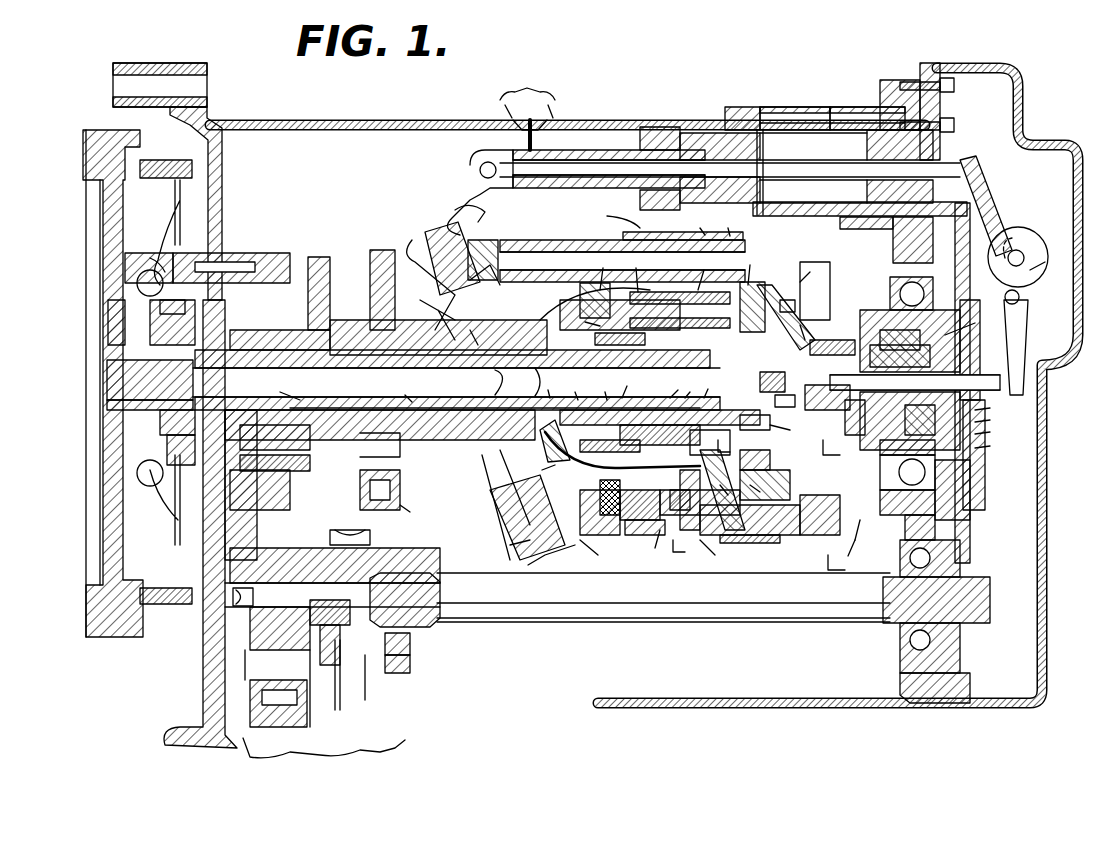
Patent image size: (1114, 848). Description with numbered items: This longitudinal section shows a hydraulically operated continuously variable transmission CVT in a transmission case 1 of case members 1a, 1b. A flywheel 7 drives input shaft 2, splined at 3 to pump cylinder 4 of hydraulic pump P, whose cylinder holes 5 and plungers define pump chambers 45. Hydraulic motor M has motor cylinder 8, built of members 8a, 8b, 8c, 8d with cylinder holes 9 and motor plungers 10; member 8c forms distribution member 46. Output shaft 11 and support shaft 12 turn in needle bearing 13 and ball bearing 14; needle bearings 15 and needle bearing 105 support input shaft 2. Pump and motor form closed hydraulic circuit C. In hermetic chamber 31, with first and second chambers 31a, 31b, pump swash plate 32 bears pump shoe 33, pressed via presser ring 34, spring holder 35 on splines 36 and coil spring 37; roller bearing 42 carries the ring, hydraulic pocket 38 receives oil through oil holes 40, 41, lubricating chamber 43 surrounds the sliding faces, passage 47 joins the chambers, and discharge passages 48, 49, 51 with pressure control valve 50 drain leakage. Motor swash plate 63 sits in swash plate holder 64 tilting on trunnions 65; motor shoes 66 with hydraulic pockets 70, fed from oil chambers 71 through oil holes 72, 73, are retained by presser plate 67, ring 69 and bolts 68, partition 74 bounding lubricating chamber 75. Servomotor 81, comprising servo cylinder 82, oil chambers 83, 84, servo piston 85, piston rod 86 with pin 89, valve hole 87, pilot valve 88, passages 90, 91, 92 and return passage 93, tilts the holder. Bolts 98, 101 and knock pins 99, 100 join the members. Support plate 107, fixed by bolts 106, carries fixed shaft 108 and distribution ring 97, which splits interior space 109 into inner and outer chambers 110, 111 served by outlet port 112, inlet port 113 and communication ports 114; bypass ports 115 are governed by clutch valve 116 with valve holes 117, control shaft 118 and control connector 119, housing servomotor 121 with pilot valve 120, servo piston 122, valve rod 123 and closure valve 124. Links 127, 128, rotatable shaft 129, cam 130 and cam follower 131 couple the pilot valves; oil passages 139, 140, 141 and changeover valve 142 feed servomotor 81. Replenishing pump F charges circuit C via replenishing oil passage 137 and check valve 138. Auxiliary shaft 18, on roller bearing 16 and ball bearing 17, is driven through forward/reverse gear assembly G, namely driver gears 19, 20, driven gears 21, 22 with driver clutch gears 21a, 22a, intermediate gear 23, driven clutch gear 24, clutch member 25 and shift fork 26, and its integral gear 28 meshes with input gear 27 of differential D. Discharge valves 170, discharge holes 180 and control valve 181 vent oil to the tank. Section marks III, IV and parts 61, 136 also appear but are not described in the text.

The power unit 1 is at (527, 90).
The engine housing section 1a is at (500, 104).
The transmission housing section 1b is at (542, 104).
The input shaft 2 is at (335, 405).
The planetary gear 3 is at (709, 386).
The planetary gear element 4 is at (691, 388).
The gear element 5 is at (722, 490).
The flywheel 7 is at (110, 535).
The belt 8 is at (625, 525).
The pulley 8a is at (608, 308).
The pulley member 8b is at (660, 234).
The pulley member 8c is at (750, 530).
The pulley member 8d is at (858, 552).
The secondary shaft 9 is at (700, 223).
The shaft 10 is at (622, 253).
The housing part 11 is at (452, 440).
The housing wall 12 is at (950, 296).
The clutch element 13 is at (175, 310).
The bearing 14 is at (898, 478).
The shaft part 15 is at (298, 388).
The bearing 16 is at (248, 608).
The bearing 17 is at (908, 645).
The output shaft 18 is at (549, 595).
The clutch disc 19 is at (318, 257).
The clutch disc 20 is at (380, 257).
The gear 21 is at (318, 700).
The gear hub 21a is at (330, 632).
The gear 22 is at (398, 675).
The gear hub 22a is at (398, 650).
The sleeve 23 is at (405, 490).
The gear 24 is at (375, 612).
The synchronizer 25 is at (350, 527).
The shift fork 26 is at (345, 708).
The clutch housing 27 is at (240, 680).
The housing part 28 is at (241, 485).
The cylinder 31 is at (600, 507).
The cylinder part 31a is at (575, 320).
The cylinder part 31b is at (676, 290).
The piston 32 is at (588, 300).
The piston 33 is at (550, 439).
The bearing 34 is at (574, 388).
The spring 35 is at (595, 338).
The bearing 36 is at (605, 388).
The gear 37 is at (680, 386).
The bearing 38 is at (548, 387).
The gear 40 is at (683, 491).
The gear 41 is at (708, 442).
The pulley flange 42 is at (537, 461).
The pulley flange 43 is at (601, 271).
The clutch 45 is at (755, 459).
The clutch 46 is at (770, 284).
The bearing 47 is at (627, 384).
The shaft section 48 is at (418, 387).
The bolt 49 is at (240, 462).
The hub 50 is at (300, 458).
The hub 51 is at (260, 497).
The gear 61 is at (696, 500).
The pulley half 63 is at (509, 549).
The pulley half 64 is at (541, 560).
The bearing 65 is at (497, 380).
The pulley half 66 is at (480, 282).
The pulley half 67 is at (482, 331).
The shift element 68 is at (475, 222).
The pulley half 69 is at (592, 556).
The pulley half 70 is at (425, 245).
The clutch 71 is at (815, 286).
The pulley member 72 is at (490, 255).
The pulley member 73 is at (428, 317).
The housing wall 74 is at (388, 336).
The pulley half 75 is at (523, 505).
The stator 81 is at (788, 110).
The stator winding 82 is at (812, 110).
The stator holder 83 is at (752, 112).
The stator 84 is at (846, 135).
The rotor 85 is at (785, 188).
The rotor 86 is at (598, 152).
The rotor element 87 is at (665, 132).
The motor shaft 88 is at (842, 166).
The arm 89 is at (485, 162).
The bearing 90 is at (846, 191).
The bearing 91 is at (726, 224).
The winding 92 is at (690, 137).
The rod 93 is at (522, 170).
The gear 97 is at (813, 324).
The gear 98 is at (640, 522).
The gear 99 is at (762, 482).
The gear 100 is at (810, 535).
The bearing 101 is at (775, 530).
The clutch 105 is at (755, 417).
The bolt 106 is at (954, 94).
The shaft 107 is at (996, 432).
The bearing 108 is at (890, 295).
The bearing holder 109 is at (893, 255).
The gear 110 is at (766, 480).
The bearing 111 is at (896, 502).
The clutch plate 112 is at (762, 300).
The clutch plate 113 is at (783, 422).
The clutch drum 114 is at (752, 290).
The gear 115 is at (870, 335).
The gear 116 is at (910, 394).
The gear 117 is at (850, 440).
The housing 118 is at (952, 490).
The shaft 119 is at (996, 447).
The gear 120 is at (996, 407).
The gear 121 is at (890, 455).
The gear 122 is at (922, 420).
The gear 123 is at (820, 348).
The gear 124 is at (827, 399).
The lever 127 is at (990, 200).
The lever 128 is at (1028, 318).
The pivot 129 is at (1025, 250).
The cam 130 is at (1040, 268).
The pivot pin 131 is at (1021, 296).
The hub 136 is at (240, 284).
The bore 137 is at (365, 410).
The bearing 138 is at (760, 382).
The shaft 139 is at (940, 312).
The gear 140 is at (996, 420).
The disc 141 is at (1000, 240).
The shaft 142 is at (973, 325).
The gear 170 is at (648, 547).
The gear 180 is at (862, 533).
The gear 181 is at (899, 523).
The clutch C is at (803, 271).
The continuously variable transmission CVT is at (718, 556).
The differential D is at (392, 736).
The flywheel spring F is at (148, 258).
The gear unit G is at (412, 511).
The motor M is at (616, 216).
The planetary gear P is at (705, 272).
The section line III is at (698, 500).
The section line IV is at (825, 506).